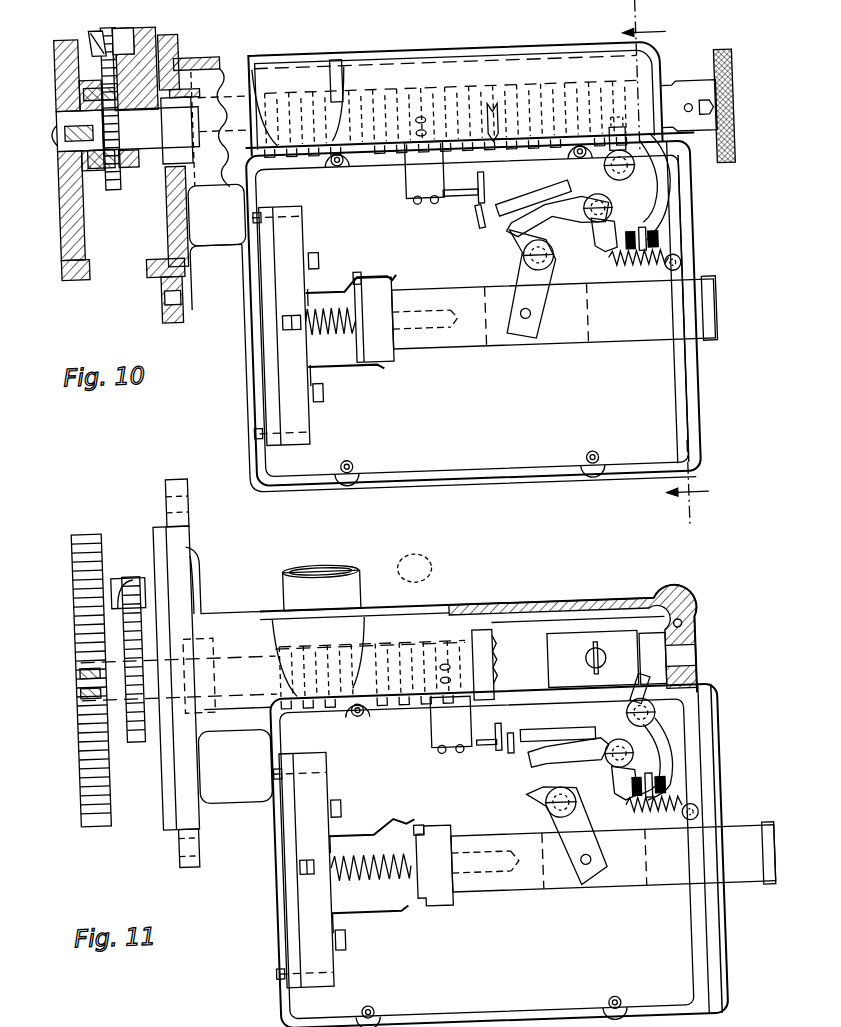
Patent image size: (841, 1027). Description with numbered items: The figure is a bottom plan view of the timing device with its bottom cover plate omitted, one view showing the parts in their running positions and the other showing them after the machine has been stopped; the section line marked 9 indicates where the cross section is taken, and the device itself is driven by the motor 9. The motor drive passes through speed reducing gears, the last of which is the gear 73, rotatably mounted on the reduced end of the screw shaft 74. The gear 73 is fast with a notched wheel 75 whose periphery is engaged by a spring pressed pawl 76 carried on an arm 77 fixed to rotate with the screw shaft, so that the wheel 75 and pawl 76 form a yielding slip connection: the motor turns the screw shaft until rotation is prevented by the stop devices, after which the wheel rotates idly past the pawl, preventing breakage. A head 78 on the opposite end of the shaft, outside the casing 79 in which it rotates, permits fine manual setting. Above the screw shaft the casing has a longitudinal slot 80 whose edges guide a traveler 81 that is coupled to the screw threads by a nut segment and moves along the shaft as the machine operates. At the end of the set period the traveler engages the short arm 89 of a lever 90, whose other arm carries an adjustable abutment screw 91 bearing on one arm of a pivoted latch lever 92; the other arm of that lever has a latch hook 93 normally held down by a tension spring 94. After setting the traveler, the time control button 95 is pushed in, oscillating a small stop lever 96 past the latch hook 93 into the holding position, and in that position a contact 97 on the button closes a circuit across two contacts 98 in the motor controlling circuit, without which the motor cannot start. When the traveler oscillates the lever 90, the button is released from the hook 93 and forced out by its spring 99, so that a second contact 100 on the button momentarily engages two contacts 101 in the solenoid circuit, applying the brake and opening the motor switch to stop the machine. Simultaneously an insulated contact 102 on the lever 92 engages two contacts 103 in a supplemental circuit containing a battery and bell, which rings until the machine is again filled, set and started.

In FIG. 10, the motor 9 is at (665, 273).
In FIG. 10, the gear 73 is at (67, 213).
In FIG. 11, the gear 73 is at (84, 794).
In FIG. 10, the screw shaft 74 is at (212, 98).
In FIG. 11, the screw shaft 74 is at (417, 638).
In FIG. 10, the notched wheel 75 is at (122, 175).
In FIG. 11, the notched wheel 75 is at (150, 721).
In FIG. 10, the pawl 76 is at (140, 32).
In FIG. 11, the pawl 76 is at (128, 593).
In FIG. 10, the arm 77 is at (149, 40).
In FIG. 11, the arm 77 is at (176, 673).
In FIG. 10, the head 78 is at (742, 149).
In FIG. 10, the casing 79 is at (689, 245).
In FIG. 11, the casing 79 is at (716, 931).
In FIG. 11, the longitudinal slot 80 is at (521, 659).
In FIG. 11, the traveler 81 is at (618, 650).
In FIG. 10, the short arm 89 is at (619, 145).
In FIG. 10, the lever 90 is at (662, 199).
In FIG. 11, the lever 90 is at (648, 736).
In FIG. 10, the adjustable abutment screw 91 is at (662, 249).
In FIG. 11, the adjustable abutment screw 91 is at (668, 797).
In FIG. 10, the latch lever 92 is at (607, 237).
In FIG. 11, the latch lever 92 is at (625, 783).
In FIG. 10, the latch hook 93 is at (514, 233).
In FIG. 11, the latch hook 93 is at (555, 745).
In FIG. 10, the tension spring 94 is at (647, 279).
In FIG. 11, the tension spring 94 is at (662, 821).
In FIG. 10, the time control button 95 is at (623, 338).
In FIG. 11, the time control button 95 is at (743, 839).
In FIG. 10, the stop lever 96 is at (526, 266).
In FIG. 11, the stop lever 96 is at (551, 825).
In FIG. 10, the contact 97 is at (361, 351).
In FIG. 11, the contact 97 is at (421, 903).
In FIG. 10, the contacts 98 is at (365, 369).
In FIG. 11, the contacts 98 is at (374, 901).
In FIG. 10, the spring 99 is at (349, 331).
In FIG. 11, the spring 99 is at (382, 875).
In FIG. 10, the second contact 100 is at (347, 270).
In FIG. 11, the second contact 100 is at (420, 823).
In FIG. 10, the contacts 101 is at (381, 271).
In FIG. 11, the contacts 101 is at (385, 817).
In FIG. 10, the insulated contact 102 is at (480, 218).
In FIG. 10, the contacts 103 is at (488, 186).